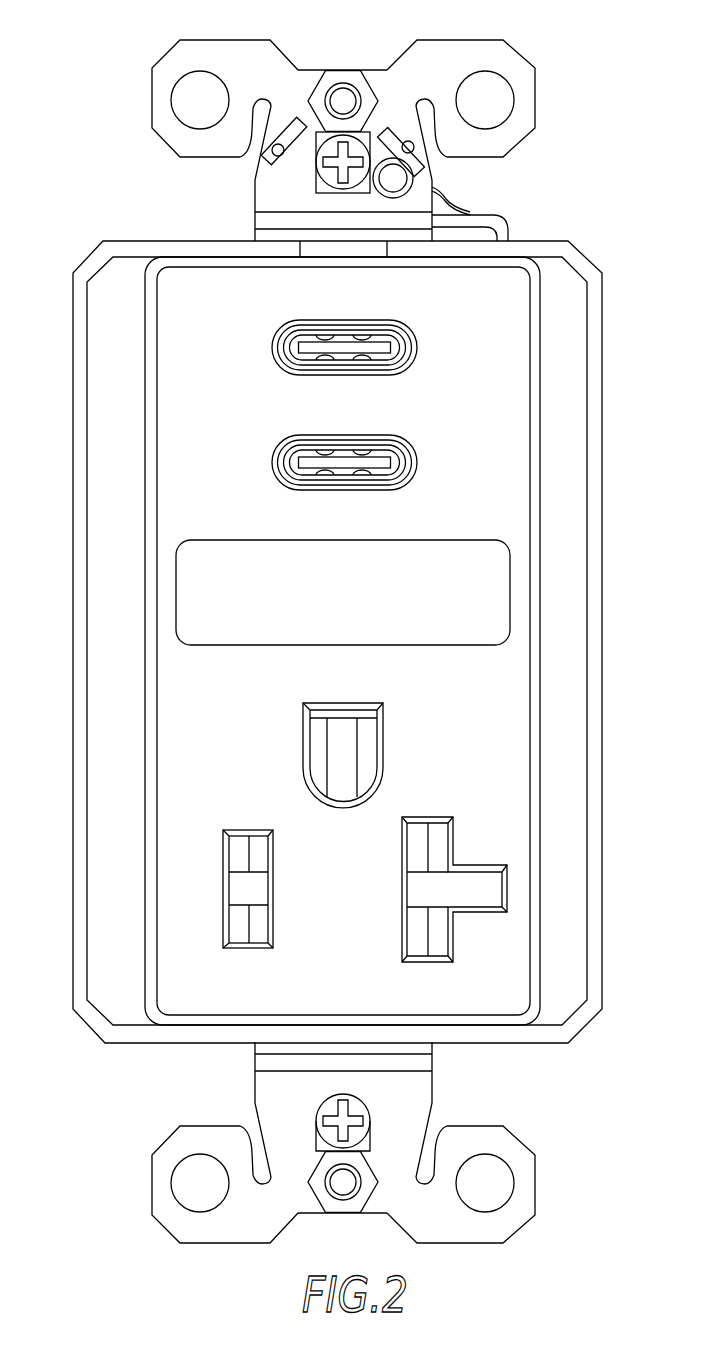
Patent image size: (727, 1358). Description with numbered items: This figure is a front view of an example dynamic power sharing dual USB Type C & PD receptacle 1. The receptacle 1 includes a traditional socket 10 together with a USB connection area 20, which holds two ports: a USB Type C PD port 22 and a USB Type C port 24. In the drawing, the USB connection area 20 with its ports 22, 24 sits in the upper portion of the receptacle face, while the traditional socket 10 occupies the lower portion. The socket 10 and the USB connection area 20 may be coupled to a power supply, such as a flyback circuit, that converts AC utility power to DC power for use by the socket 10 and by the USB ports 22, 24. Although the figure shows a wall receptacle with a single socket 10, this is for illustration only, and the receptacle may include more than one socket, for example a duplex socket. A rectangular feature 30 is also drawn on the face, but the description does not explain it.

The dynamic power sharing dual USB Type C & PD receptacle 1 is at (307, 621).
The traditional socket 10 is at (252, 767).
The USB connection area 20 is at (302, 384).
The USB Type C PD port 22 is at (340, 320).
The USB Type C port 24 is at (350, 435).
The indicator window 30 is at (292, 540).